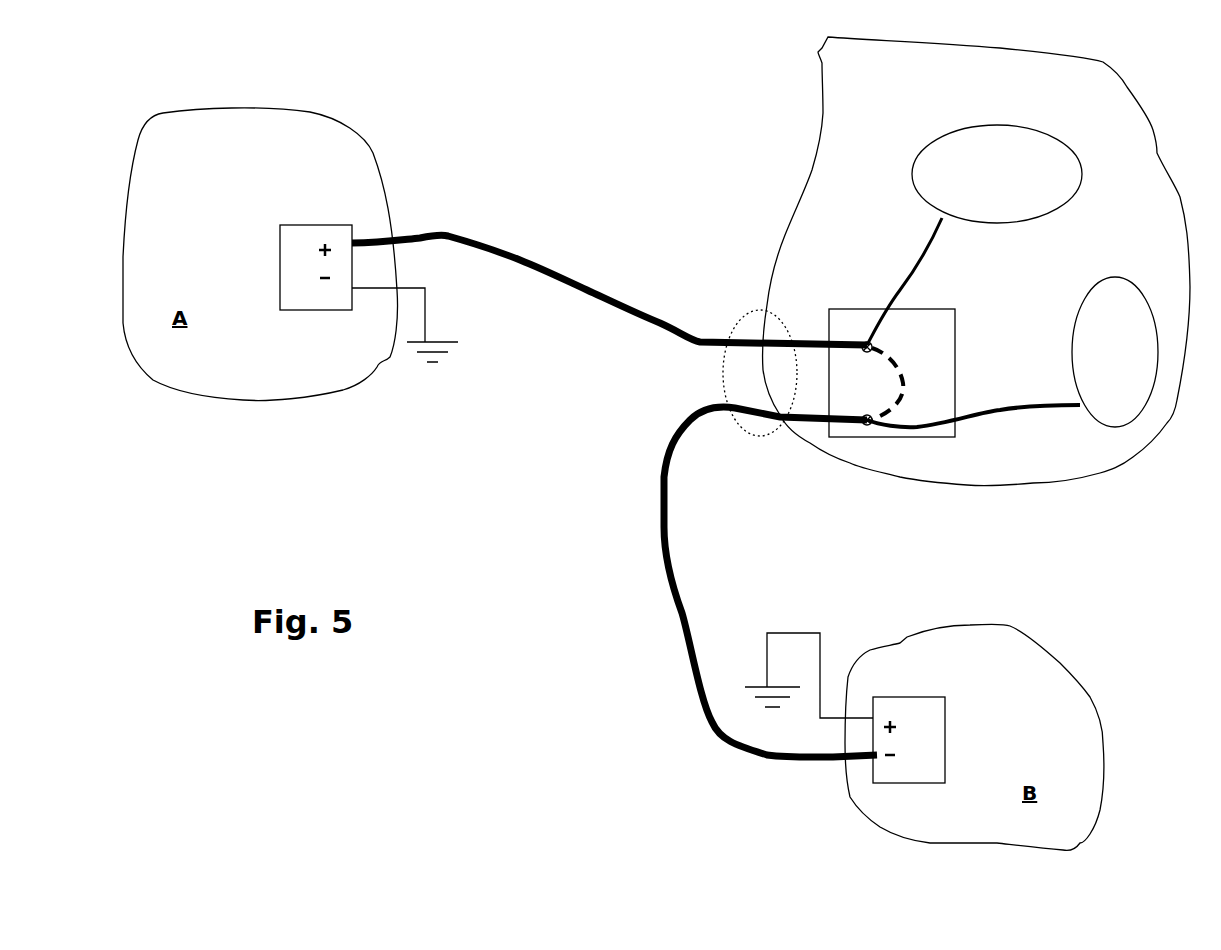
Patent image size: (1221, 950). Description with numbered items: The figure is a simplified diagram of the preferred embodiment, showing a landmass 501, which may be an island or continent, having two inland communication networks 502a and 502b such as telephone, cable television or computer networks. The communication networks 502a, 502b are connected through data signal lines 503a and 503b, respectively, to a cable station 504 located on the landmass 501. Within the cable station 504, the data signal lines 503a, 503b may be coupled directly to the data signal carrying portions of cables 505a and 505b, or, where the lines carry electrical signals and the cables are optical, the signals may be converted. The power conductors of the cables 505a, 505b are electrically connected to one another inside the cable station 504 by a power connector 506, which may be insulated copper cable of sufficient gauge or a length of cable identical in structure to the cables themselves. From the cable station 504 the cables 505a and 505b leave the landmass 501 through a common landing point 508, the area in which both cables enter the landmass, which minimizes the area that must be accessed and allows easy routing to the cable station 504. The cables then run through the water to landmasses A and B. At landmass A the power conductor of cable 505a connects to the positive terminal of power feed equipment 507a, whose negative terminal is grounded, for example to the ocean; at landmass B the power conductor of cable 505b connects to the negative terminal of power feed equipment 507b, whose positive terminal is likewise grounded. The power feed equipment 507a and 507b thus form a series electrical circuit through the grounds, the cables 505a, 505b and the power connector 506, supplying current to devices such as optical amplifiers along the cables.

The landmass 501 is at (976, 261).
The inland communication network 502a is at (910, 168).
The inland communication network 502b is at (1117, 277).
The data signal line 503a is at (912, 265).
The data signal line 503b is at (1013, 413).
The cable station 504 is at (897, 440).
The cable 505a is at (527, 257).
The cable 505b is at (665, 580).
The power connector 506 is at (905, 372).
The power feed equipment 507a is at (317, 303).
The power feed equipment 507b is at (952, 717).
The common landing point 508 is at (722, 370).